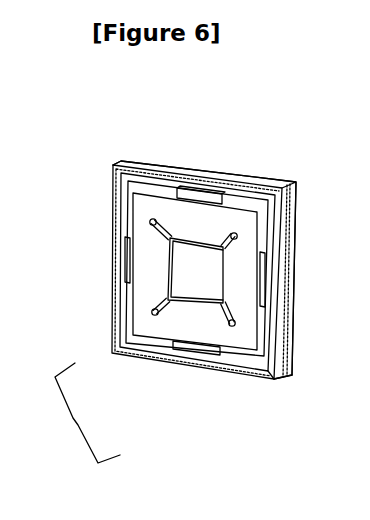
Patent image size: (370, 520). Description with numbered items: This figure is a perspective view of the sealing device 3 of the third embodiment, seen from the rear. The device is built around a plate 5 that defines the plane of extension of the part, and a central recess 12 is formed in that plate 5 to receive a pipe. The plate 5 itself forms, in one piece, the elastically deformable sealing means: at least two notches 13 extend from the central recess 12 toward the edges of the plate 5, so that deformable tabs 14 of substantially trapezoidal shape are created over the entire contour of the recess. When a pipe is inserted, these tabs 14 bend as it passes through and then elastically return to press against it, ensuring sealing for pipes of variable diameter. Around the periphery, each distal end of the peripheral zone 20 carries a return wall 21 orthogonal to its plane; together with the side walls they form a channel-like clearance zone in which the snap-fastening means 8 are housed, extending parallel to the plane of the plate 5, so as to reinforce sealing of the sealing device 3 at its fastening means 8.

The sealing device 3 is at (72, 425).
The plate 5 is at (143, 215).
The snap-fastening means 8 is at (187, 190).
The central recess 12 is at (197, 290).
The notches 13 is at (234, 233).
The deformable tabs 14 is at (154, 275).
The peripheral zone 20 is at (278, 380).
The return wall 21 is at (140, 165).